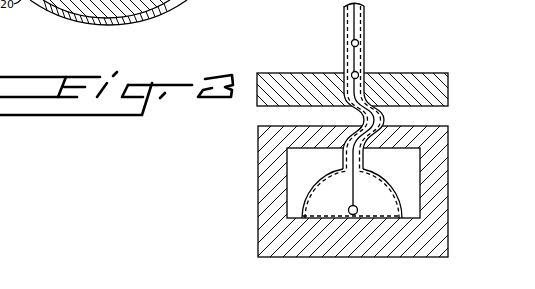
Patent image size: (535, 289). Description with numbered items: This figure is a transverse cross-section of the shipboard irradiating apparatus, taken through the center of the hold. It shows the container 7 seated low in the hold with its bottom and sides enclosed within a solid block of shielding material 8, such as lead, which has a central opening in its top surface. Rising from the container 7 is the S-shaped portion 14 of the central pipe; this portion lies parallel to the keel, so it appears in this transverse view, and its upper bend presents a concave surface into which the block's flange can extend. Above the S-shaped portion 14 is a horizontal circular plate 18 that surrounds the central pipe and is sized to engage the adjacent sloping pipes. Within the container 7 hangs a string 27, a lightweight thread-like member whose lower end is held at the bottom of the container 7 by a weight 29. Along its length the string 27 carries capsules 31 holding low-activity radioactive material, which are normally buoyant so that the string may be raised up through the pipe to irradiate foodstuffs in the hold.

The container 7 is at (320, 177).
The solid block of shielding material 8 is at (449, 158).
The S-shaped portion 14 is at (385, 117).
The horizontal circular plate 18 is at (320, 99).
The string 27 is at (366, 23).
The weight 29 is at (357, 206).
The capsule 31 is at (358, 43).